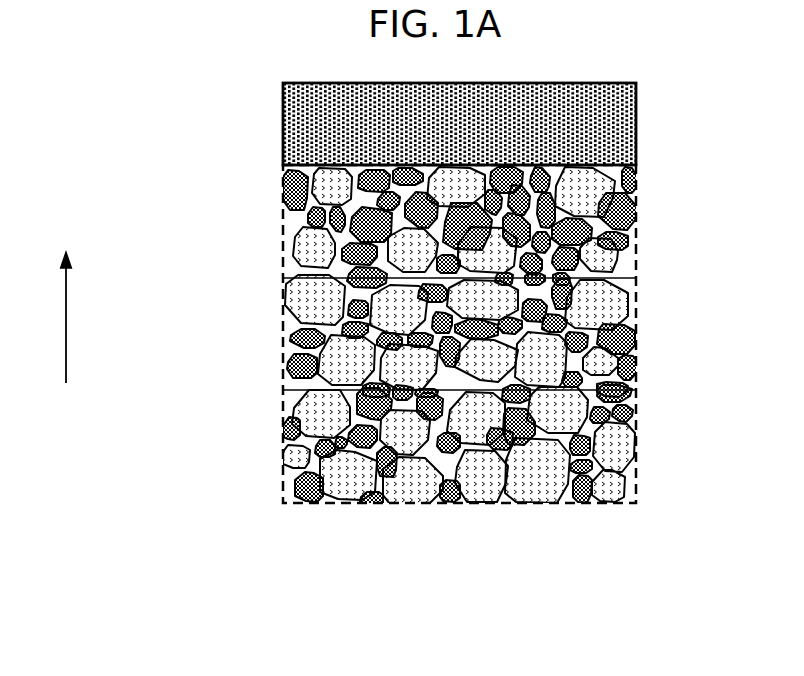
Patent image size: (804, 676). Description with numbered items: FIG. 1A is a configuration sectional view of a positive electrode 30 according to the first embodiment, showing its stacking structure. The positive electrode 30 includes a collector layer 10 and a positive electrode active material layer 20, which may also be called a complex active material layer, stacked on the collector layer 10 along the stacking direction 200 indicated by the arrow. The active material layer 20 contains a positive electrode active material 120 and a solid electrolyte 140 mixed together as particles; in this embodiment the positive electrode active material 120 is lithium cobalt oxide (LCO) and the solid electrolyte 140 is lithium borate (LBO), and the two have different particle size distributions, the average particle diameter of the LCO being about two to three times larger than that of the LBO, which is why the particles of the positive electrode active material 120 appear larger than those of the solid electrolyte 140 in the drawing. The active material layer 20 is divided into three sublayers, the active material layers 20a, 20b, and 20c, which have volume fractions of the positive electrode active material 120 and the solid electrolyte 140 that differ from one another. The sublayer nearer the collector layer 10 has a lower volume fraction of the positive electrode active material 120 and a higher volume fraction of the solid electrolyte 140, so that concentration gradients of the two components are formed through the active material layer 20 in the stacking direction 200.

The positive electrode 30 is at (68, 61).
The collector layer 10 is at (283, 124).
The positive electrode active material layer 20 is at (191, 229).
The active material layer 20a is at (283, 223).
The active material layer 20b is at (283, 334).
The active material layer 20c is at (283, 440).
The positive electrode active material 120 is at (337, 503).
The solid electrolyte 140 is at (472, 503).
The stacking direction 200 is at (62, 336).